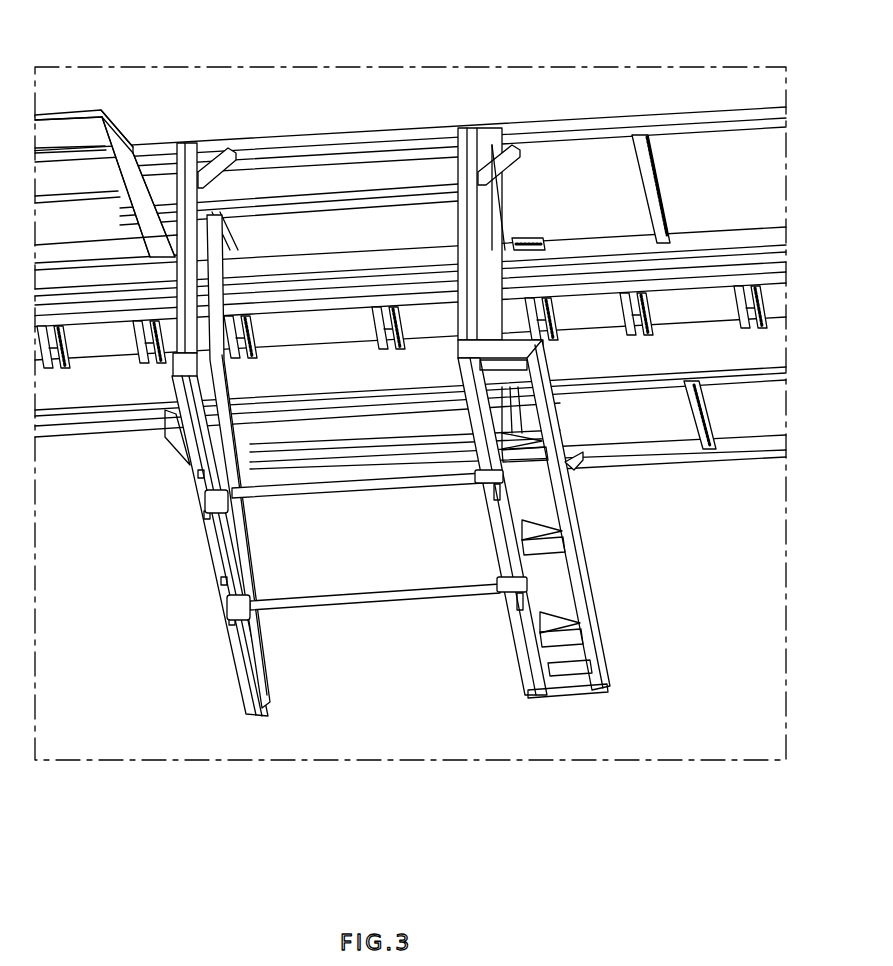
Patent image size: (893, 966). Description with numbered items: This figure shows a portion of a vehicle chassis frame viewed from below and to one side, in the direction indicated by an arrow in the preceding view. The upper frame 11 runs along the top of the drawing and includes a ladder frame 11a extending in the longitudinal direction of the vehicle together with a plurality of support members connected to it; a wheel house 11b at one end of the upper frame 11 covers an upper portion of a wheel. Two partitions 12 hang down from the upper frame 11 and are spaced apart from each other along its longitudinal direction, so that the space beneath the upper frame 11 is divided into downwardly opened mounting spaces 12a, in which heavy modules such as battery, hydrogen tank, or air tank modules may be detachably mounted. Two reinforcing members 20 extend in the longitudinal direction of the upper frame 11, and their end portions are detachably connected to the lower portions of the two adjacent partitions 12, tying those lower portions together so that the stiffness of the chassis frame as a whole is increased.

The upper frame 11 is at (410, 192).
The ladder frame 11a is at (532, 245).
The wheel house 11b is at (80, 110).
The partition 12 is at (200, 570).
The mounting space 12a is at (159, 491).
The reinforcing member 20 is at (388, 492).